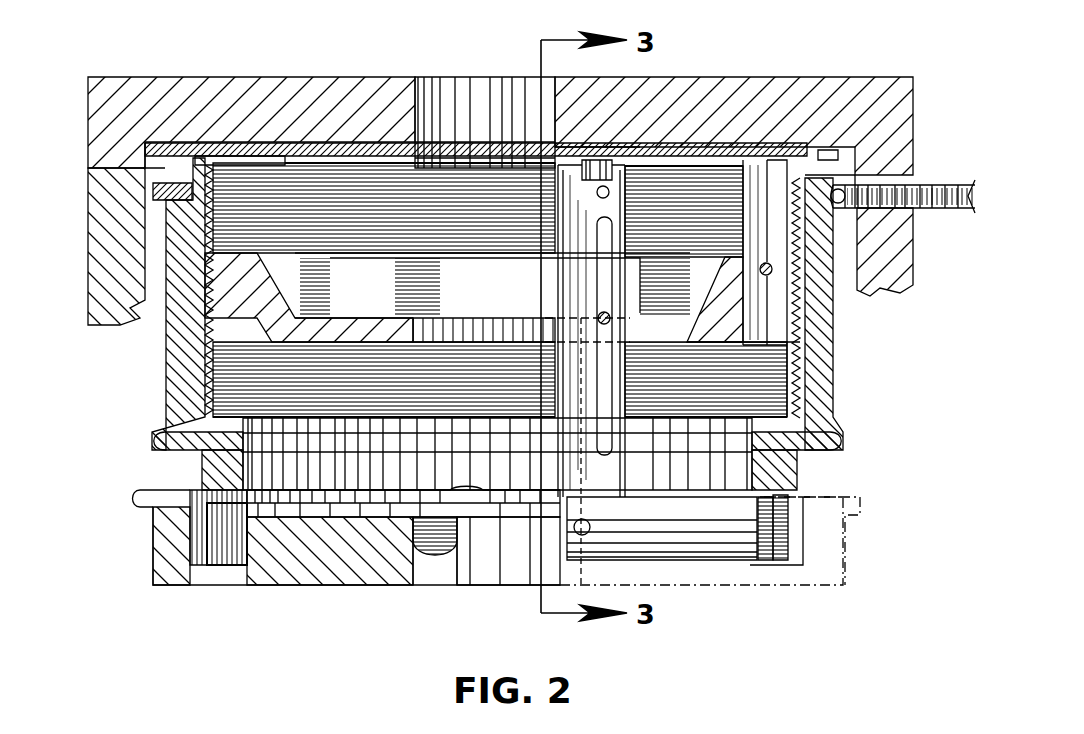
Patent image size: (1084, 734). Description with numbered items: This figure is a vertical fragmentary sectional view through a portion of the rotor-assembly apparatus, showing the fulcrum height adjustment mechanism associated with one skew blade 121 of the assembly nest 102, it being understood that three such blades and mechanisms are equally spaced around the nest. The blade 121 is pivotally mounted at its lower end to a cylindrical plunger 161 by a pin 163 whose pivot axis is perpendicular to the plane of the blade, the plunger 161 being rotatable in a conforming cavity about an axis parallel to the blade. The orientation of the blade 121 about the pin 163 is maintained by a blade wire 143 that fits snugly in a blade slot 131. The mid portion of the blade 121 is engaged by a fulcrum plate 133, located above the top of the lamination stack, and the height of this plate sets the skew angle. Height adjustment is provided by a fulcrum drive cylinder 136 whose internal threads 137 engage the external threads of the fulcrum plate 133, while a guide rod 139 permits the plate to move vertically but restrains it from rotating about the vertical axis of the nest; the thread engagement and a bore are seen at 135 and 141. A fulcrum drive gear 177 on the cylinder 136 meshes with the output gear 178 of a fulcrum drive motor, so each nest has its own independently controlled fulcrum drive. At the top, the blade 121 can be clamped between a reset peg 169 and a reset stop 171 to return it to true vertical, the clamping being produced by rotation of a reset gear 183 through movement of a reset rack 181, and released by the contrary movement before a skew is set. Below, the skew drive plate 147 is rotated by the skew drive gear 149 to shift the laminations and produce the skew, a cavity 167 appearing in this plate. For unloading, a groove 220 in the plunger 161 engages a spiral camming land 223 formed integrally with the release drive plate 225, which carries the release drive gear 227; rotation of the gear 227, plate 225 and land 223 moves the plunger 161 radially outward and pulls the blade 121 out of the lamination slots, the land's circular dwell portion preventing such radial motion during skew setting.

The assembly nest 102 is at (158, 360).
The skew blade 121 is at (592, 372).
The blade slot 131 is at (610, 270).
The fulcrum plate 133 is at (500, 291).
The threads 135 is at (205, 285).
The fulcrum drive cylinder 136 is at (165, 327).
The internal threads 137 is at (270, 165).
The guide rod 139 is at (770, 290).
The bore 141 is at (760, 286).
The blade wire 143 is at (600, 316).
The skew drive plate 147 is at (192, 585).
The skew drive gear 149 is at (143, 507).
The plunger 161 is at (672, 516).
The pin 163 is at (586, 519).
The cavity 167 is at (440, 560).
The reset peg 169 is at (582, 165).
The reset stop 171 is at (640, 147).
The fulcrum drive gear 177 is at (176, 184).
The output gear 178 is at (972, 200).
The reset rack 181 is at (168, 142).
The reset gear 183 is at (305, 145).
The groove 220 is at (766, 560).
The spiral camming land 223 is at (240, 530).
The release drive plate 225 is at (202, 468).
The release drive gear 227 is at (160, 434).